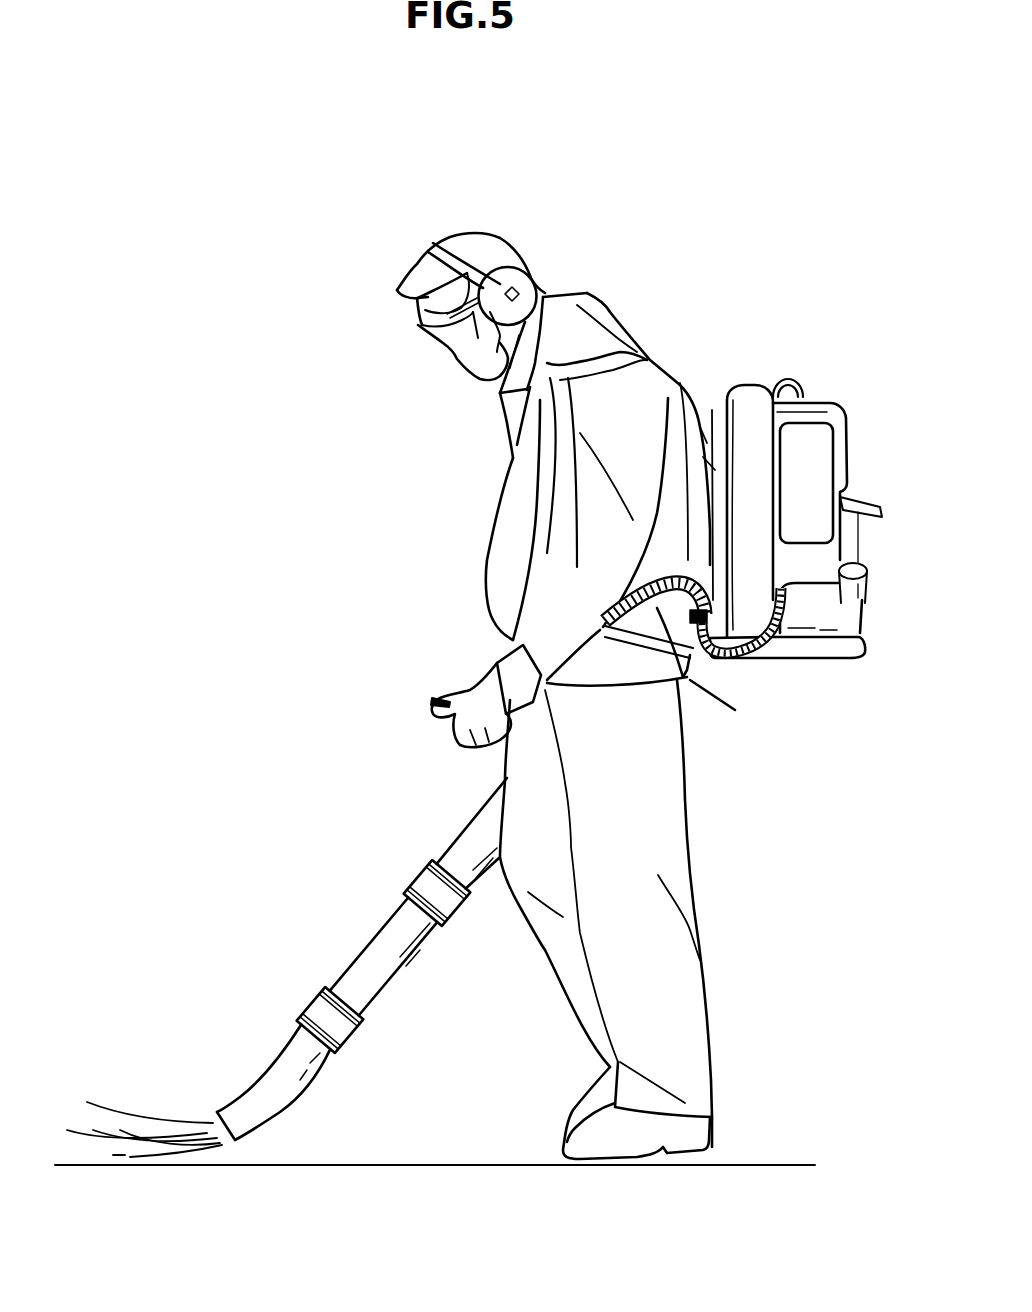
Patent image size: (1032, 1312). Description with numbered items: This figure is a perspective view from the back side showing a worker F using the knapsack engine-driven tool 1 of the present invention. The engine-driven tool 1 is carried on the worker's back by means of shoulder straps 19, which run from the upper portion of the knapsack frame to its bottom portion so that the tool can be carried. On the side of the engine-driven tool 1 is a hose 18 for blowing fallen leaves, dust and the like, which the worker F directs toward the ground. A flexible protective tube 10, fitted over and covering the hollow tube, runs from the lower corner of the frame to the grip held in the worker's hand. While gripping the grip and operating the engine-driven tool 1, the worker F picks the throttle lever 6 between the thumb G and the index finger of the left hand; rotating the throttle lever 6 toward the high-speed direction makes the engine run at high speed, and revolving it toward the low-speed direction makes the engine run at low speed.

The engine-driven tool 1 is at (827, 405).
The throttle lever 6 is at (447, 700).
The flexible protective tube 10 is at (683, 677).
The hose 18 is at (378, 935).
The shoulder straps 19 is at (537, 552).
The worker F is at (500, 515).
The thumb G is at (477, 690).